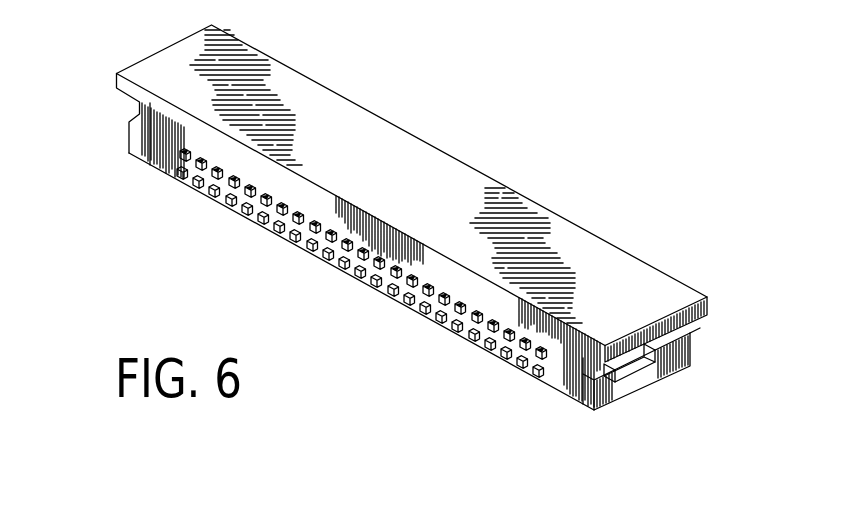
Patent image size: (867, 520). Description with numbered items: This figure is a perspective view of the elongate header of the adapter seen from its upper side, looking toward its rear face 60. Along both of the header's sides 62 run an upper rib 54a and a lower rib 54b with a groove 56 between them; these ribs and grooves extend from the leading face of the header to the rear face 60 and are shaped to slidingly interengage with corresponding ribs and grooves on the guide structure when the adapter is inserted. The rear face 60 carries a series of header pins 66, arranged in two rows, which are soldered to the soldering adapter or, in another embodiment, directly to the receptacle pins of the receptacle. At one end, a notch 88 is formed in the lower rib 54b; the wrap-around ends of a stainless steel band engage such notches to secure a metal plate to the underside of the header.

The rear face 60 is at (398, 228).
The sides 62 is at (116, 91).
The header pins 66 is at (388, 293).
The upper rib 54a is at (698, 309).
The lower rib 54b is at (615, 400).
The groove 56 is at (583, 362).
The notch 88 is at (645, 367).